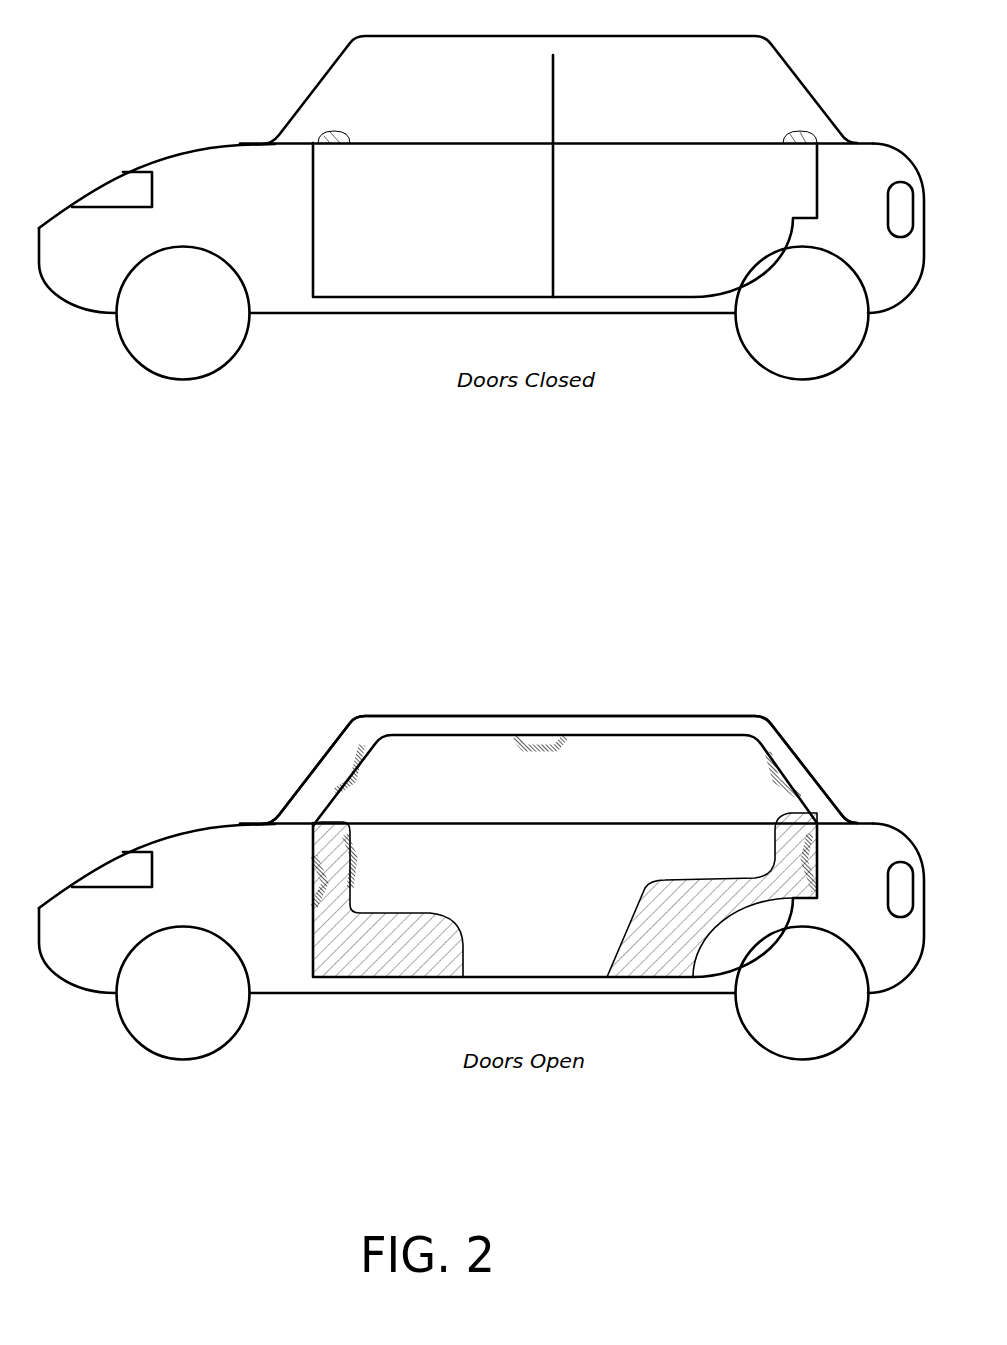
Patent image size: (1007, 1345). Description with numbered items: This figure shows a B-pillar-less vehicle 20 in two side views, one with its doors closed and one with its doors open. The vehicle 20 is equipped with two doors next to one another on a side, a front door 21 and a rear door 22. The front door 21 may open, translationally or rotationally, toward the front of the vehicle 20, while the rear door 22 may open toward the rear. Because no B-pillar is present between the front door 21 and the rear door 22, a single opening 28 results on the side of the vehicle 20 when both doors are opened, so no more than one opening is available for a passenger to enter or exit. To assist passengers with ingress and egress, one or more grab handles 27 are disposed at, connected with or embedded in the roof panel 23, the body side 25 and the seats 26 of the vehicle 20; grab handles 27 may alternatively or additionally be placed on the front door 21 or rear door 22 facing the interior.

The vehicle 20 is at (104, 47).
The front door 21 is at (477, 199).
The rear door 22 is at (677, 199).
The roof panel 23 is at (437, 725).
The body side 25 is at (287, 862).
The seats 26 is at (410, 957).
The grab handles 27 is at (504, 753).
The single opening 28 is at (549, 853).